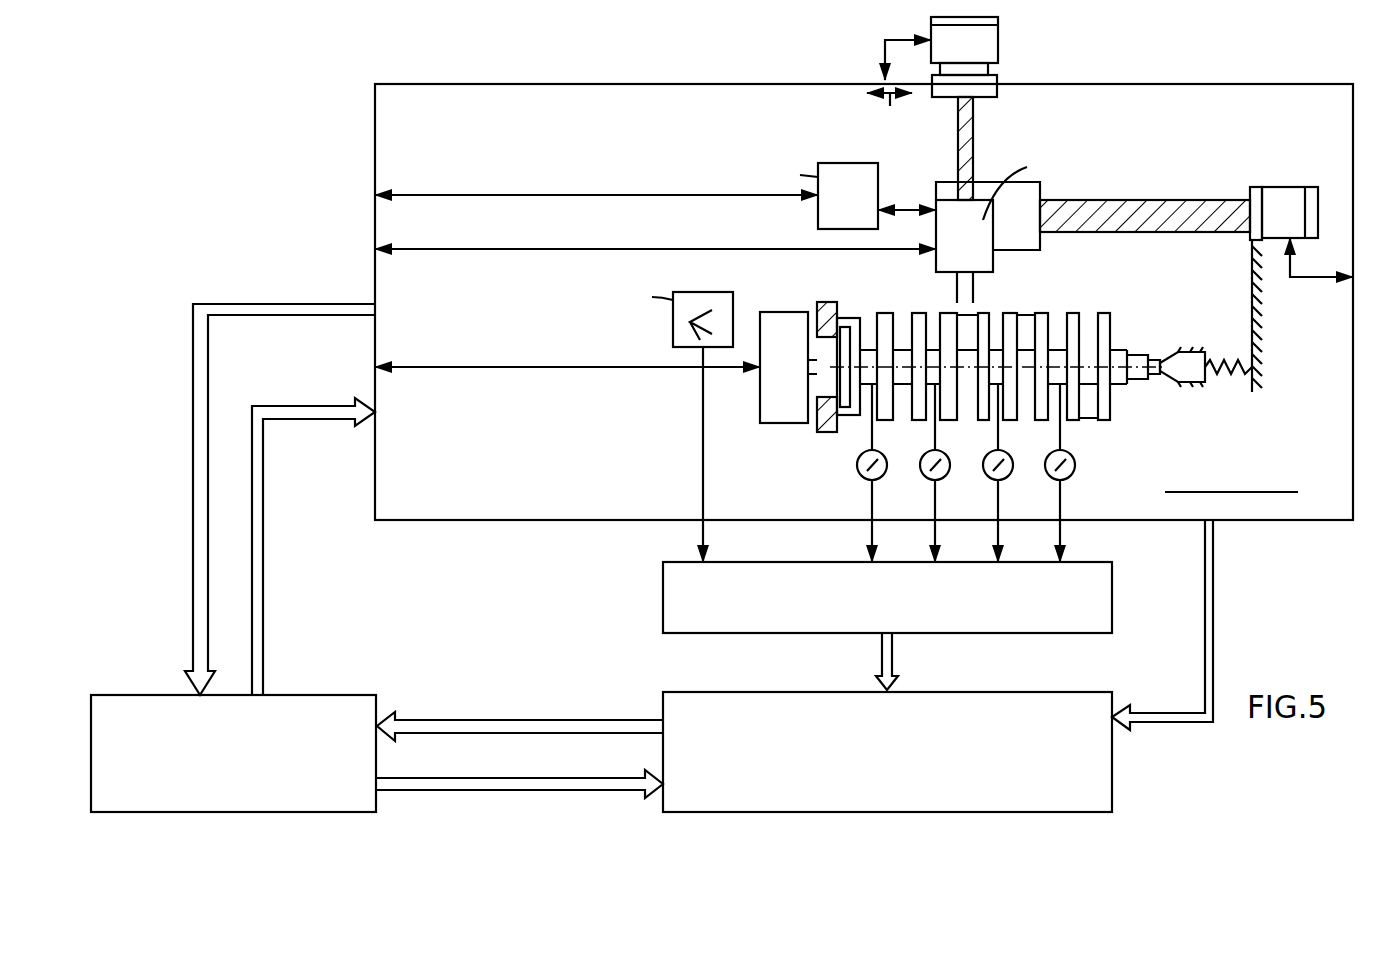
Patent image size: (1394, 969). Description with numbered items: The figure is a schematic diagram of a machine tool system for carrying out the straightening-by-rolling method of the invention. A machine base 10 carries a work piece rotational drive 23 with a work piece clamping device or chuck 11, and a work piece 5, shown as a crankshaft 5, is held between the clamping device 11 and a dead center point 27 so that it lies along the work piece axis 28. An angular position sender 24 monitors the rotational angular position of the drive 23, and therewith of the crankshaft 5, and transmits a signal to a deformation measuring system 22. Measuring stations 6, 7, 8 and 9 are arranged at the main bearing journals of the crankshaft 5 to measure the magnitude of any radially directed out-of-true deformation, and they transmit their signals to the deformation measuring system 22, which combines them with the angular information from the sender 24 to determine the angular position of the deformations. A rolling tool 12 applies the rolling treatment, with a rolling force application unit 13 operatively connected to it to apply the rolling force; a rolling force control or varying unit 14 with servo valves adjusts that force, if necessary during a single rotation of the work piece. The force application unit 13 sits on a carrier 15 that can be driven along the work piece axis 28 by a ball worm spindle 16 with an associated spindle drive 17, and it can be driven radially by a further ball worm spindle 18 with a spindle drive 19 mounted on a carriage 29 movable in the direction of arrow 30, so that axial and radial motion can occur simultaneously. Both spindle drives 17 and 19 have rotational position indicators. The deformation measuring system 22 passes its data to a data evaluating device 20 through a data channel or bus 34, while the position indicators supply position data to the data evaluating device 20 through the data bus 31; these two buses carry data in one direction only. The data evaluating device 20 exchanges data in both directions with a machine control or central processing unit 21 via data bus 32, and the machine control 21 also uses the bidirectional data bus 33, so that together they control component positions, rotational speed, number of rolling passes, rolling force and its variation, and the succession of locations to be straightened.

The work piece 5 is at (1047, 318).
The measuring station 6 is at (1062, 500).
The measuring station 7 is at (1000, 500).
The measuring station 8 is at (937, 500).
The measuring station 9 is at (874, 500).
The machine base 10 is at (468, 88).
The work piece clamping device 11 is at (835, 314).
The rolling tool 12 is at (965, 296).
The rolling force application unit 13 is at (983, 252).
The rolling force control unit 14 is at (878, 192).
The carrier 15 is at (980, 183).
The ball worm spindle 16 is at (1193, 232).
The spindle drive 17 is at (1284, 185).
The ball worm spindle 18 is at (975, 120).
The spindle drive 19 is at (990, 47).
The data evaluating device 20 is at (1100, 780).
The machine control 21 is at (136, 696).
The deformation measuring system 22 is at (663, 600).
The work piece rotational drive 23 is at (802, 316).
The angular position sender 24 is at (673, 322).
The dead center point 27 is at (1187, 380).
The work piece axis 28 is at (1255, 365).
The carriage 29 is at (997, 80).
The arrow 30 is at (883, 113).
The data bus 31 is at (1213, 582).
The data bus 32 is at (479, 705).
The data bus 33 is at (276, 541).
The data channel 34 is at (915, 660).